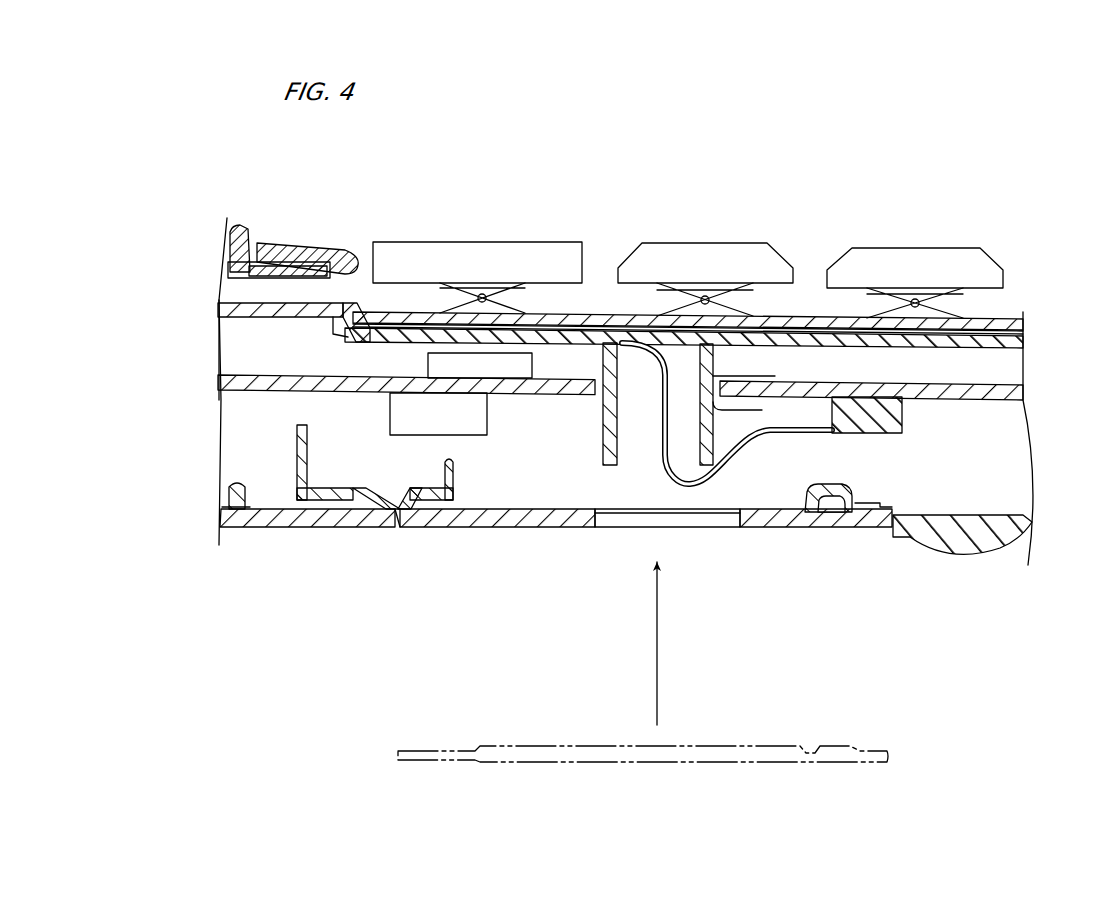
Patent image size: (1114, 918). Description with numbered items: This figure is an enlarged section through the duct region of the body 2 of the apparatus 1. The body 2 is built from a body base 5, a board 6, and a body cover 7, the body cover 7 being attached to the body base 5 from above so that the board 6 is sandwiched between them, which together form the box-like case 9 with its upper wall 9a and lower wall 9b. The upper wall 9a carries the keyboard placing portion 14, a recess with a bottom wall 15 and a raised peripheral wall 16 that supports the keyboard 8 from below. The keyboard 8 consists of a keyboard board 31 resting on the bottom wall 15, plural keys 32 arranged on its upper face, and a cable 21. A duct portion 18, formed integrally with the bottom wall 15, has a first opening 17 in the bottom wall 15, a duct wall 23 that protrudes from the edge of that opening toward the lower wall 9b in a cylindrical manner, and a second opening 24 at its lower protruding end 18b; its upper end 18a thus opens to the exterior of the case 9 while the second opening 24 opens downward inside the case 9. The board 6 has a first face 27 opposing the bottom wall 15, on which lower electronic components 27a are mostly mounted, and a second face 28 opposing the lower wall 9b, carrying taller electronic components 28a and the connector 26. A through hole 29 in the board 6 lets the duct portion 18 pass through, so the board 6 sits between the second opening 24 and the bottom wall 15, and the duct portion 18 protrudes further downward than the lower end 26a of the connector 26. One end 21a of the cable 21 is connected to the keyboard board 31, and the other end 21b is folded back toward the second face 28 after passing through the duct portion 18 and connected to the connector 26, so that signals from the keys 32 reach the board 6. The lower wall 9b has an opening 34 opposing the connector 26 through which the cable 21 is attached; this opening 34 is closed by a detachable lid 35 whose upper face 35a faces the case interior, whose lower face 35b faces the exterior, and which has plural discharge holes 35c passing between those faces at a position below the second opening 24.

The image forming apparatus 1 is at (1082, 80).
The body 2 is at (993, 130).
The body base 5 is at (1022, 522).
The board 6 is at (1026, 395).
The body cover 7 is at (1026, 343).
The keyboard 8 is at (1026, 323).
The case 9 is at (263, 529).
The upper wall 9a is at (287, 300).
The lower wall 9b is at (330, 529).
The keyboard placing portion 14 is at (951, 340).
The bottom wall 15 is at (812, 332).
The peripheral wall 16 is at (340, 328).
The first opening 17 is at (683, 335).
The duct portion 18 is at (600, 417).
The one end of the duct portion 18a is at (603, 360).
The other end of the duct portion 18b is at (604, 458).
The cable 21 is at (757, 442).
The one end of the cable 21a is at (356, 308).
The other end of the cable 21b is at (824, 436).
The duct wall 23 is at (714, 372).
The second opening 24 is at (617, 463).
The connector 26 is at (903, 418).
The lower end of the connector 26a is at (876, 434).
The first face 27 is at (245, 377).
The electronic components 27a is at (428, 366).
The second face 28 is at (248, 392).
The electronic components 28a is at (391, 418).
The through hole 29 is at (722, 403).
The keyboard board 31 is at (606, 316).
The keys 32 is at (485, 256).
The opening 34 is at (401, 529).
The lid 35 is at (788, 529).
The upper face 35a is at (597, 510).
The lower face 35b is at (520, 529).
The discharge holes 35c is at (608, 529).